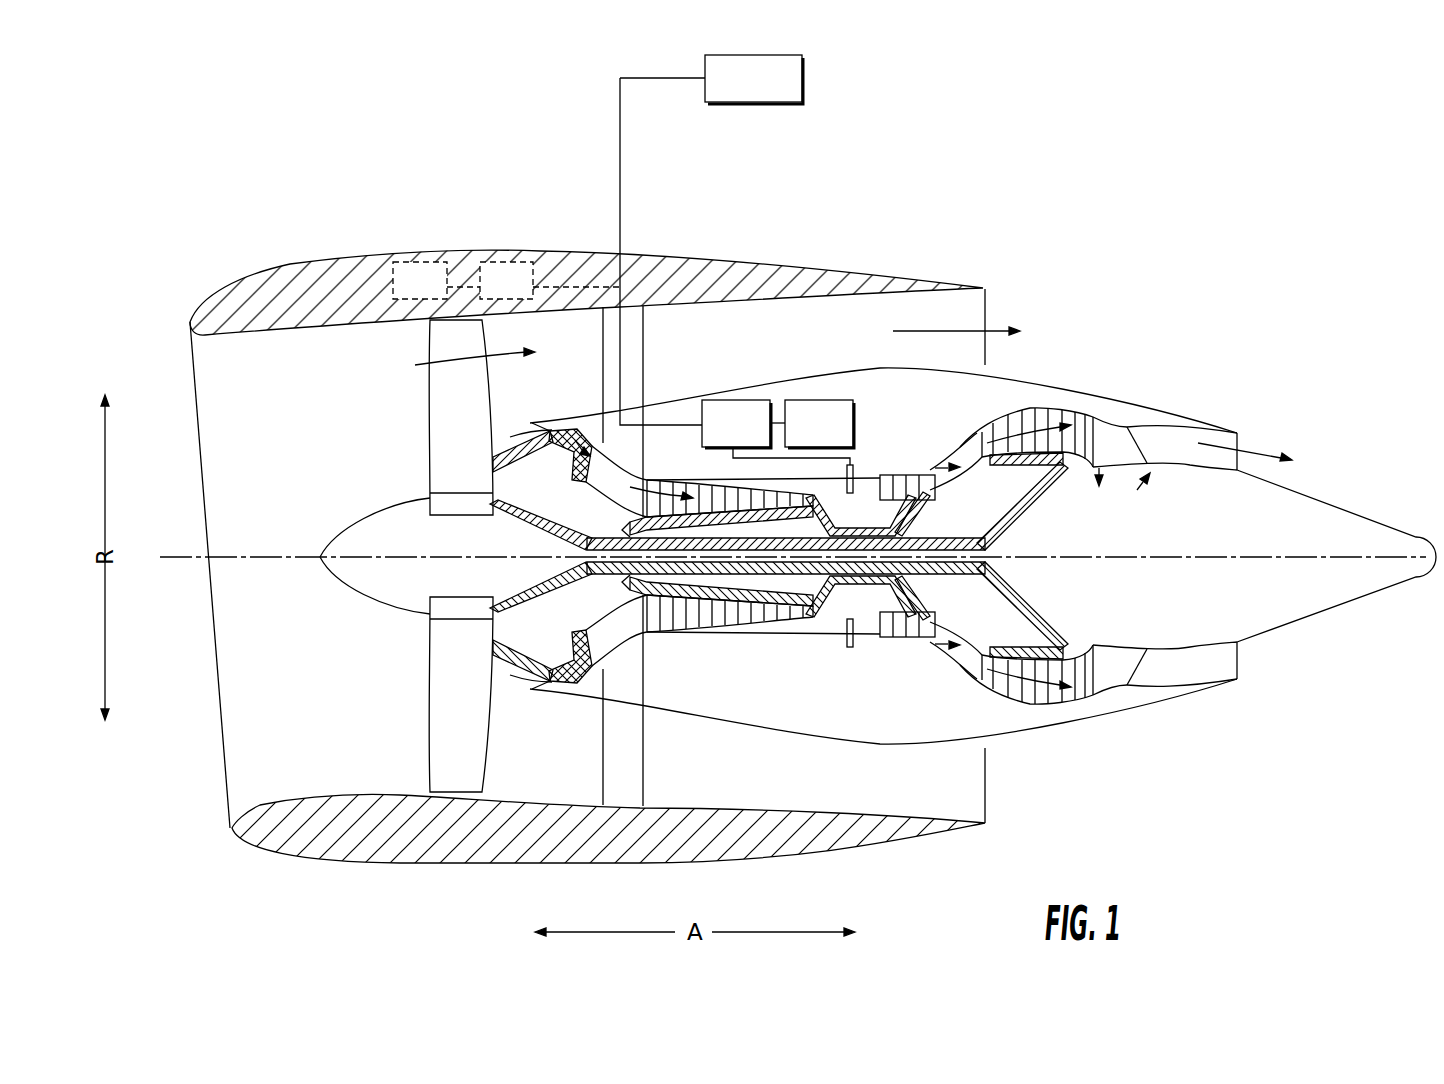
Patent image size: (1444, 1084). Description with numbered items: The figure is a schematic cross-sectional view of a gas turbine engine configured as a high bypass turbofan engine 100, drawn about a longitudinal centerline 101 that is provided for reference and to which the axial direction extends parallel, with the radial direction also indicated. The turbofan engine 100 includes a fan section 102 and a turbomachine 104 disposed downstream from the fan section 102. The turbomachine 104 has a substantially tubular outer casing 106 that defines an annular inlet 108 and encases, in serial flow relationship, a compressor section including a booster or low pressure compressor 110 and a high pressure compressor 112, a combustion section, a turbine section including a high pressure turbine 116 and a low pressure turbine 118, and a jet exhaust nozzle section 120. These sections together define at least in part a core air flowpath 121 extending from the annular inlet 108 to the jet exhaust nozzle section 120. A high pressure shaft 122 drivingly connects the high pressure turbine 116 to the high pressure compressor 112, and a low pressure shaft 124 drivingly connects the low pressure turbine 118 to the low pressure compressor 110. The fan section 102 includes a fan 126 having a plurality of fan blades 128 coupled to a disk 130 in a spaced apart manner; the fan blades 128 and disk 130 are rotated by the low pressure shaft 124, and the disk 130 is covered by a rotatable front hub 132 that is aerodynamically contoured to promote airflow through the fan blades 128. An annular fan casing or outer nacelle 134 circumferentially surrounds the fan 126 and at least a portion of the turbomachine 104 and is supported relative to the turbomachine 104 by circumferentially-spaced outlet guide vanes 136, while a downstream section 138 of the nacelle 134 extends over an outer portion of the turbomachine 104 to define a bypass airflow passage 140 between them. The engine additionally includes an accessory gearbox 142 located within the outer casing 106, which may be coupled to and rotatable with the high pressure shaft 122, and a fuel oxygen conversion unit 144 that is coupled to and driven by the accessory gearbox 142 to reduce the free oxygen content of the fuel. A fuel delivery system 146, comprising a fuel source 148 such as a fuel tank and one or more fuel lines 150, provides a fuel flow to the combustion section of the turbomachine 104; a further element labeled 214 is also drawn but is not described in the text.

The high bypass turbofan engine 100 is at (1143, 258).
The longitudinal centerline 101 is at (1207, 552).
The fan section 102 is at (378, 335).
The turbomachine 104 is at (767, 365).
The outer casing 106 is at (828, 742).
The annular inlet 108 is at (547, 677).
The low pressure compressor 110 is at (577, 693).
The high pressure compressor 112 is at (678, 620).
The high pressure turbine 116 is at (940, 638).
The low pressure turbine 118 is at (1075, 707).
The jet exhaust nozzle section 120 is at (1143, 673).
The core air flowpath 121 is at (625, 637).
The high pressure shaft 122 is at (873, 527).
The low pressure shaft 124 is at (933, 538).
The fan 126 is at (367, 415).
The fan blades 128 is at (427, 727).
The disk 130 is at (445, 507).
The front hub 132 is at (340, 578).
The outer nacelle 134 is at (488, 862).
The outlet guide vanes 136 is at (645, 340).
The downstream section of the nacelle 138 is at (898, 275).
The bypass airflow passage 140 is at (872, 336).
The accessory gearbox 142 is at (403, 296).
The fuel oxygen conversion unit 144 is at (490, 296).
The fuel delivery system 146 is at (537, 115).
The fuel source 148 is at (772, 90).
The fuel lines 150 is at (620, 197).
The sensor 214 is at (870, 627).